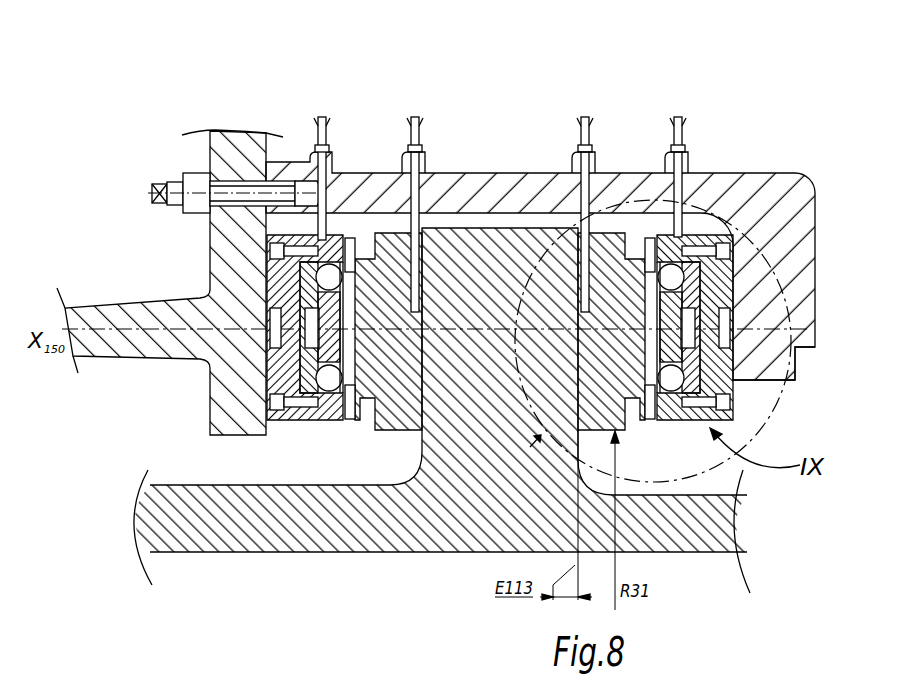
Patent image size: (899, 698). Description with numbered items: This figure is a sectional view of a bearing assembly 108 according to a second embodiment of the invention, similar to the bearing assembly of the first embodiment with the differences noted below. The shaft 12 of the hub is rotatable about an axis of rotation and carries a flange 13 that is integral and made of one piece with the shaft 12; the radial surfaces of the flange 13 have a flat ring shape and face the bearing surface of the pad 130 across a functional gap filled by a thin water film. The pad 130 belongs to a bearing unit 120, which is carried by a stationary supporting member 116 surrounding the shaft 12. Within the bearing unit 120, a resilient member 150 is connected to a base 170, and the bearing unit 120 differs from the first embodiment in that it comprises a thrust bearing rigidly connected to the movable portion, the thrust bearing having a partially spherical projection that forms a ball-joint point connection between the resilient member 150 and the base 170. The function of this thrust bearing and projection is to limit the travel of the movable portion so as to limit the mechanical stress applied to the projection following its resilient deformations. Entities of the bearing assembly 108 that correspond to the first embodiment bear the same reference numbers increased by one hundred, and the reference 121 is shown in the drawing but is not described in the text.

The shaft 12 is at (233, 521).
The flange 13 is at (490, 237).
The bearing assembly 108 is at (188, 104).
The stationary supporting member 116 is at (523, 188).
The bearing unit 120 is at (737, 463).
The first bearing 121 is at (302, 435).
The pad 130 is at (611, 331).
The resilient member 150 is at (686, 234).
The base 170 is at (708, 237).